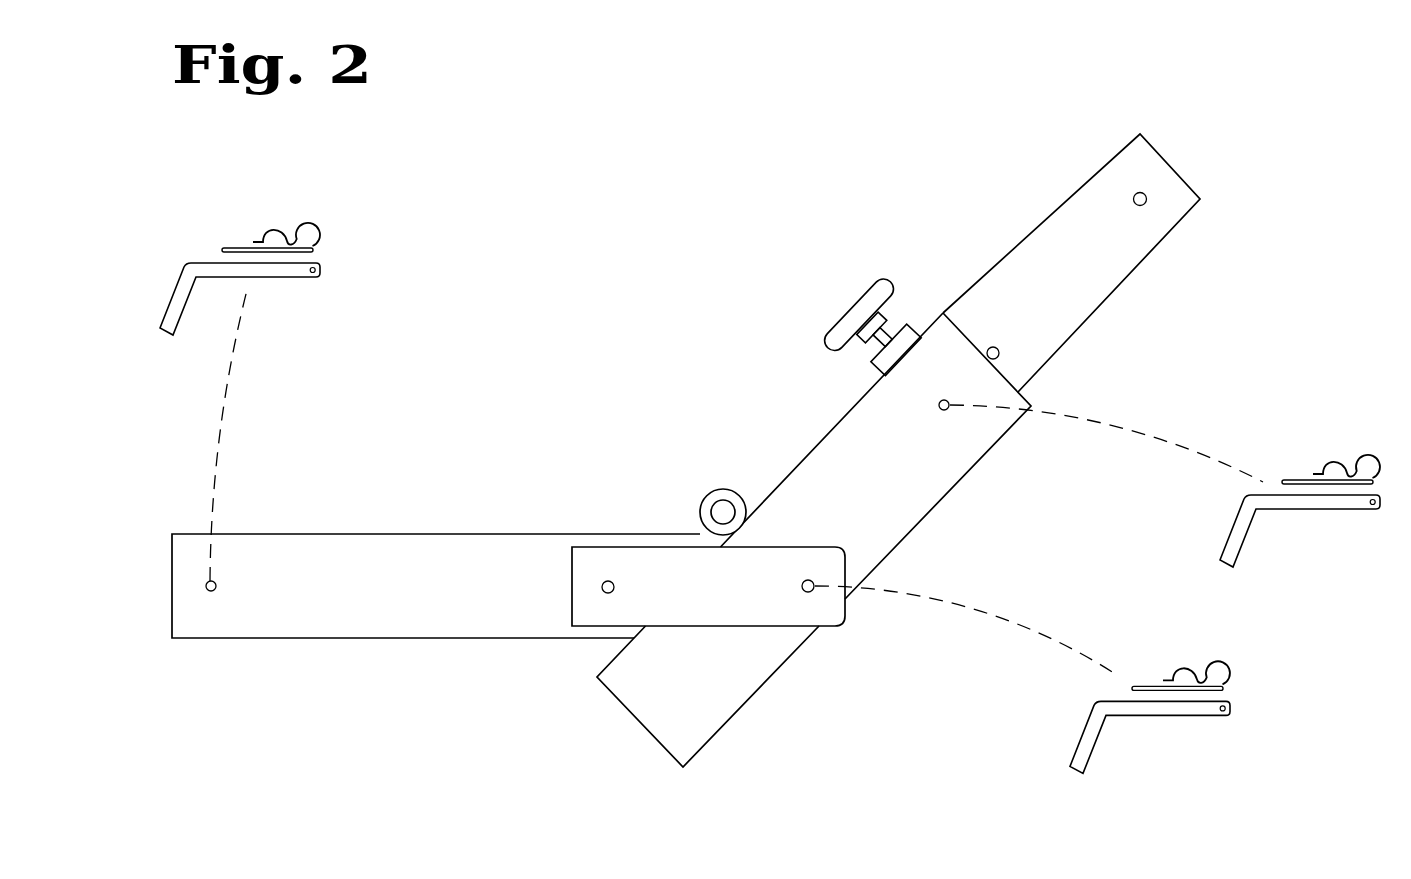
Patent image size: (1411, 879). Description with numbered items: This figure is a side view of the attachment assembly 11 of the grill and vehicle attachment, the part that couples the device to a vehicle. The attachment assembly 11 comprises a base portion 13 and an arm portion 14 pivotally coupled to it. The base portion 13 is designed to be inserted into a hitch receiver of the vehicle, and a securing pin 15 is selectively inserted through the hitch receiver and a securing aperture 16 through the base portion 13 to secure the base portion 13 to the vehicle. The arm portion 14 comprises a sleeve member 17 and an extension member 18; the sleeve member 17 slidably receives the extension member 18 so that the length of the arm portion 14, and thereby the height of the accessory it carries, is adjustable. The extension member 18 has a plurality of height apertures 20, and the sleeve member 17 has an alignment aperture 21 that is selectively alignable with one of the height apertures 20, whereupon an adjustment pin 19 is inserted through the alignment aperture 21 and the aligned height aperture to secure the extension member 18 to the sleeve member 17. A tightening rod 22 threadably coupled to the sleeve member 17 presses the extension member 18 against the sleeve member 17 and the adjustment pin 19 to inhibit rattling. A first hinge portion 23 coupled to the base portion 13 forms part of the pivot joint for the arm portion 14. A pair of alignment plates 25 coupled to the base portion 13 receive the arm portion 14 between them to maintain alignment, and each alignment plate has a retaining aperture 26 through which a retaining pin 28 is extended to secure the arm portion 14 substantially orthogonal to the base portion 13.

The attachment assembly 11 is at (552, 690).
The base portion 13 is at (388, 577).
The arm portion 14 is at (975, 460).
The securing pin 15 is at (315, 258).
The securing aperture 16 is at (215, 585).
The sleeve member 17 is at (883, 492).
The extension member 18 is at (1142, 234).
The adjustment pin 19 is at (1337, 515).
The height apertures 20 is at (999, 350).
The alignment aperture 21 is at (944, 400).
The tightening rod 22 is at (868, 320).
The first hinge portion 23 is at (725, 508).
The alignment plates 25 is at (723, 602).
The retaining aperture 26 is at (808, 592).
The retaining pin 28 is at (1228, 694).